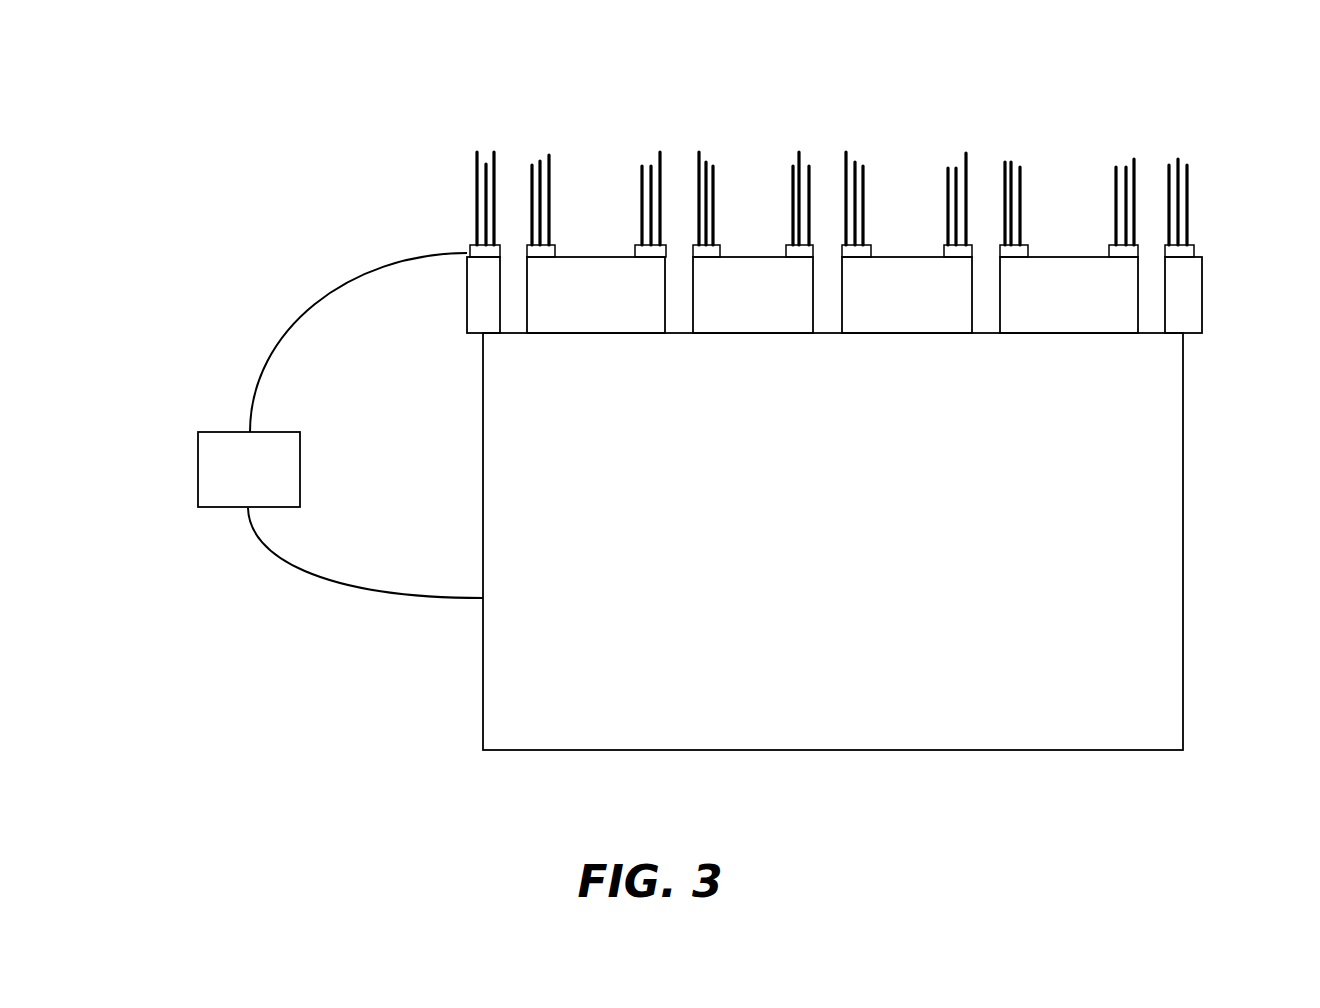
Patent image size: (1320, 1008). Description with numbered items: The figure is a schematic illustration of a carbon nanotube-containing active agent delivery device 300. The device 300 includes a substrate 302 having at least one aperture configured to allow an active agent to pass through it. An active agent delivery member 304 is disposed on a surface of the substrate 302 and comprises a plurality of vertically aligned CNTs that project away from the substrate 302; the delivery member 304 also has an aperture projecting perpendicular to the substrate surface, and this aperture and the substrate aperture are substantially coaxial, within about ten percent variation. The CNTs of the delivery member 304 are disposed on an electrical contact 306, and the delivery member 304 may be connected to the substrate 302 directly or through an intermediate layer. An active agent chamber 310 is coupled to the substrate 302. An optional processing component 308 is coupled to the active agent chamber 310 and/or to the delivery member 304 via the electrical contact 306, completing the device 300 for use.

The active agent delivery device 300 is at (541, 61).
The substrate 302 is at (1202, 322).
The active agent delivery member 304 is at (945, 147).
The electrical contact 306 is at (1194, 252).
The processing component 308 is at (198, 488).
The active agent chamber 310 is at (1183, 459).